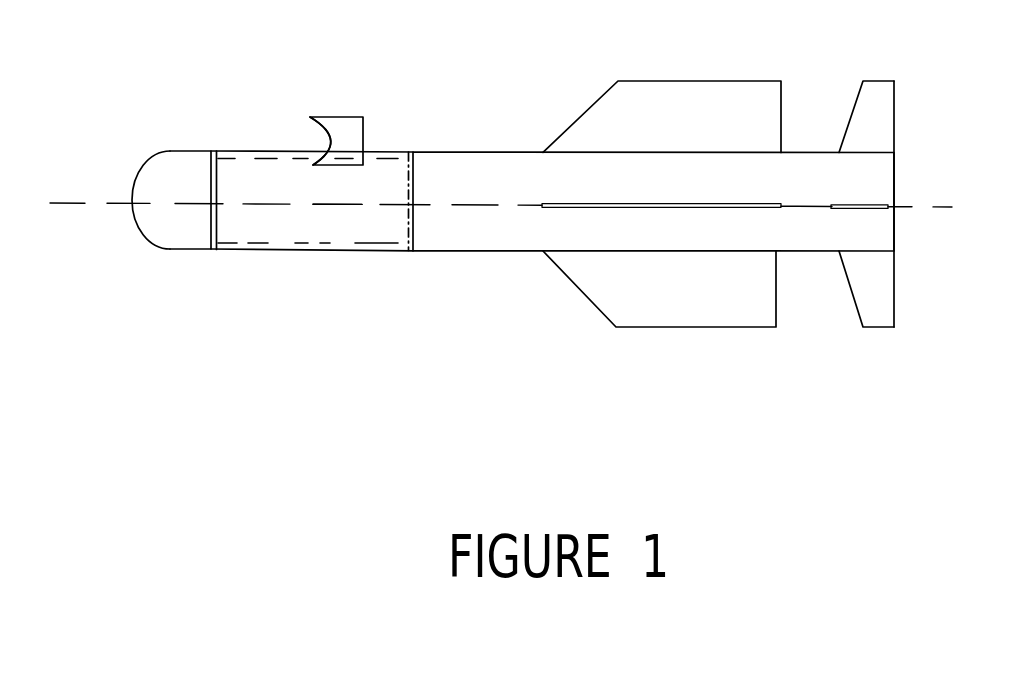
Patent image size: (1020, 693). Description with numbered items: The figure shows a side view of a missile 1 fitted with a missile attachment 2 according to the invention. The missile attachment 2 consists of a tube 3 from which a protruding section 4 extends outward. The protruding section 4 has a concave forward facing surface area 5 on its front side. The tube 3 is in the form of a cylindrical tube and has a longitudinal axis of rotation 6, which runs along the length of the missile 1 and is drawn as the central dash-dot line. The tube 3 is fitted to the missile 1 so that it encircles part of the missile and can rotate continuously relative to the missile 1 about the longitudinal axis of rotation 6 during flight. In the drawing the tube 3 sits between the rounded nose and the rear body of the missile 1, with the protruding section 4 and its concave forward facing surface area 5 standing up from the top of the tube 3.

The missile 1 is at (530, 270).
The missile attachment 2 is at (262, 227).
The tube 3 is at (339, 240).
The protruding section 4 is at (345, 136).
The concave forward facing surface area 5 is at (327, 144).
The longitudinal axis of rotation 6 is at (357, 210).